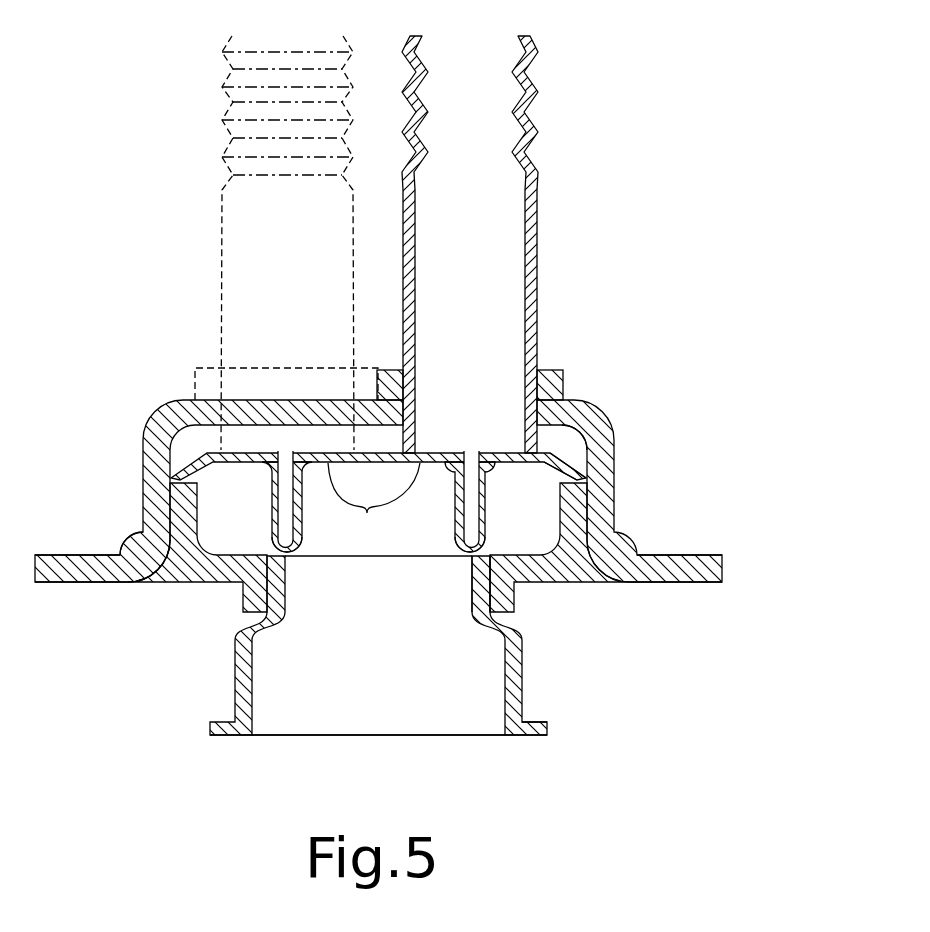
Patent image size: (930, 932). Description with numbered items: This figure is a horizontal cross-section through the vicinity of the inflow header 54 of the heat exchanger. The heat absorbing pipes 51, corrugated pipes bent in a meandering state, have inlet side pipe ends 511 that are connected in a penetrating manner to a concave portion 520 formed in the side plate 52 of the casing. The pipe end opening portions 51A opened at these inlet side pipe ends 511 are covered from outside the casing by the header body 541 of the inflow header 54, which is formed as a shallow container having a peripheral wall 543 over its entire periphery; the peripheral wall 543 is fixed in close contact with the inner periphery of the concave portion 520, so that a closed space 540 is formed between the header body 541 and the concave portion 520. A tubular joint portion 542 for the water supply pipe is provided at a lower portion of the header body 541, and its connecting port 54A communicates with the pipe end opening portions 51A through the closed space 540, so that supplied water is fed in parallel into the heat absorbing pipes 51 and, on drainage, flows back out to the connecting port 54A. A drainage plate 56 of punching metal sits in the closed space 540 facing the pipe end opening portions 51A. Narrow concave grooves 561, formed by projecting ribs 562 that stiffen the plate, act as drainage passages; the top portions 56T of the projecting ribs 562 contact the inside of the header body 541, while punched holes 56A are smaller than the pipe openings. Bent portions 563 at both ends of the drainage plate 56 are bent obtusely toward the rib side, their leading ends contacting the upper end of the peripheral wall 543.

The heat absorbing pipe 51 is at (222, 96).
The inlet side pipe end 511 is at (185, 398).
The pipe end opening portion 51A is at (582, 478).
The side plate 52 is at (65, 583).
The concave portion 520 is at (170, 565).
The inflow header 54 is at (212, 678).
The connecting port 54A is at (380, 582).
The header body 541 is at (530, 582).
The joint portion 542 is at (523, 692).
The peripheral wall 543 is at (227, 557).
The closed space 540 is at (550, 440).
The drainage plate 56 is at (178, 484).
The punched hole 56A is at (374, 505).
The top portion 56T is at (290, 557).
The concave groove 561 is at (286, 452).
The projecting rib 562 is at (304, 514).
The bent portion 563 is at (143, 452).